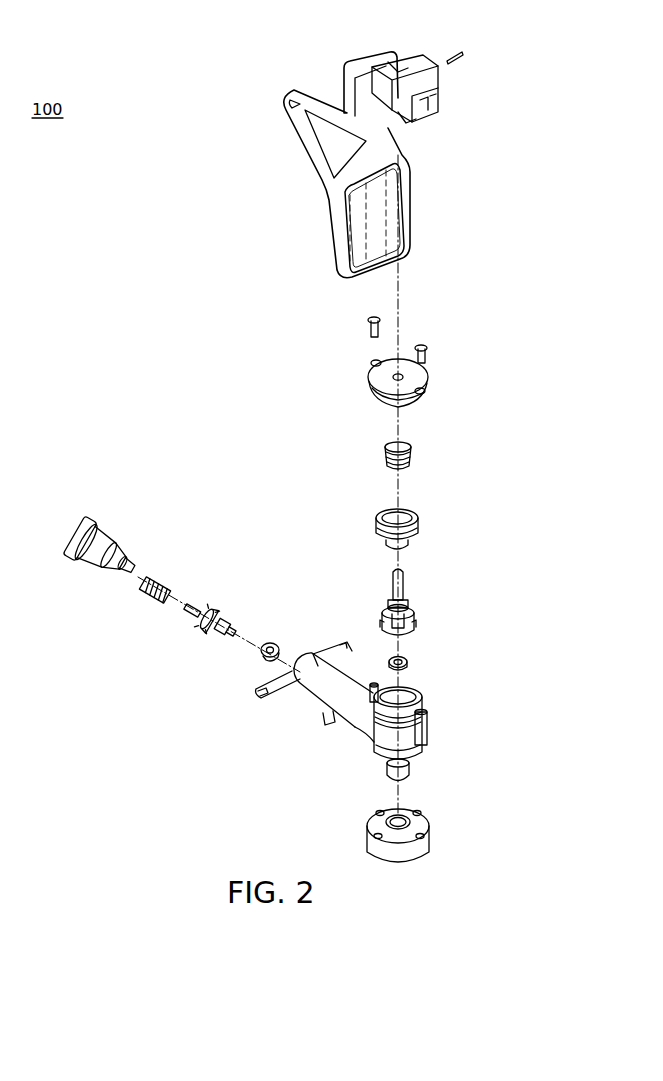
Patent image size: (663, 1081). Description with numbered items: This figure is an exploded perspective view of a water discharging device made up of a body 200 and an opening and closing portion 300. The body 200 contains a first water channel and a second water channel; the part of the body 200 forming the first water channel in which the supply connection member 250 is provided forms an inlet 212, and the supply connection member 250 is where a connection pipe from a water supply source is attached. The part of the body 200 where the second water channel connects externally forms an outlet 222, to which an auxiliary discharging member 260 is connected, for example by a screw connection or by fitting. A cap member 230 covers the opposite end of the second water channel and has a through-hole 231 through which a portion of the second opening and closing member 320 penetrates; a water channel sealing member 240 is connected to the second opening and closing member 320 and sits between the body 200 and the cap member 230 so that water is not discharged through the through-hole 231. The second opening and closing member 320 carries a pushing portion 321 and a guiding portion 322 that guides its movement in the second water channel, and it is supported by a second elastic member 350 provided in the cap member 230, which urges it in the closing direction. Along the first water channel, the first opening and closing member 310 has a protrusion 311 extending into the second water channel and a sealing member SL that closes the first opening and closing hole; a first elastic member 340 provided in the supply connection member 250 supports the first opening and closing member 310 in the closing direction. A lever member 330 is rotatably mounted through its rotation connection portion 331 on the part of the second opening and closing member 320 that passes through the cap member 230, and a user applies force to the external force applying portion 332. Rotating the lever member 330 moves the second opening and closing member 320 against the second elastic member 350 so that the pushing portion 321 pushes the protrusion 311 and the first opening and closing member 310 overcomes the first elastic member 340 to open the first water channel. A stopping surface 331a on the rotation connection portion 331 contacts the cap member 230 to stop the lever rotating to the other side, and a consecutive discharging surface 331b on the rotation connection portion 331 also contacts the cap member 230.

The body 200 is at (347, 727).
The inlet 212 is at (287, 708).
The outlet 222 is at (413, 776).
The cap member 230 is at (430, 380).
The through-hole 231 is at (392, 378).
The water channel sealing member 240 is at (423, 521).
The supply connection member 250 is at (111, 541).
The auxiliary discharging member 260 is at (433, 836).
The opening and closing portion 300 is at (148, 652).
The first opening and closing member 310 is at (208, 604).
The protrusion 311 is at (234, 627).
The second opening and closing member 320 is at (407, 582).
The pushing portion 321 is at (416, 626).
The guiding portion 322 is at (378, 625).
The lever member 330 is at (302, 170).
The rotation connection portion 331 is at (417, 68).
The stopping surface 331a is at (407, 123).
The consecutive discharging surface 331b is at (398, 70).
The external force applying portion 332 is at (332, 240).
The first elastic member 340 is at (162, 582).
The second elastic member 350 is at (413, 457).
The sealing member SL is at (411, 666).